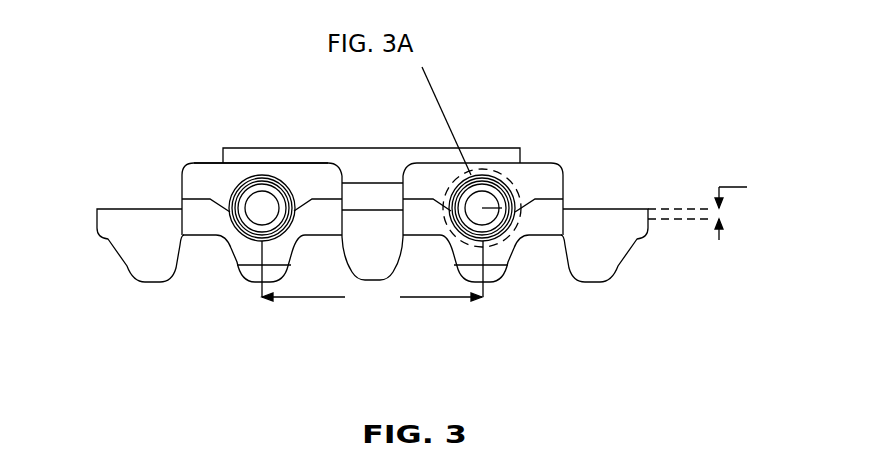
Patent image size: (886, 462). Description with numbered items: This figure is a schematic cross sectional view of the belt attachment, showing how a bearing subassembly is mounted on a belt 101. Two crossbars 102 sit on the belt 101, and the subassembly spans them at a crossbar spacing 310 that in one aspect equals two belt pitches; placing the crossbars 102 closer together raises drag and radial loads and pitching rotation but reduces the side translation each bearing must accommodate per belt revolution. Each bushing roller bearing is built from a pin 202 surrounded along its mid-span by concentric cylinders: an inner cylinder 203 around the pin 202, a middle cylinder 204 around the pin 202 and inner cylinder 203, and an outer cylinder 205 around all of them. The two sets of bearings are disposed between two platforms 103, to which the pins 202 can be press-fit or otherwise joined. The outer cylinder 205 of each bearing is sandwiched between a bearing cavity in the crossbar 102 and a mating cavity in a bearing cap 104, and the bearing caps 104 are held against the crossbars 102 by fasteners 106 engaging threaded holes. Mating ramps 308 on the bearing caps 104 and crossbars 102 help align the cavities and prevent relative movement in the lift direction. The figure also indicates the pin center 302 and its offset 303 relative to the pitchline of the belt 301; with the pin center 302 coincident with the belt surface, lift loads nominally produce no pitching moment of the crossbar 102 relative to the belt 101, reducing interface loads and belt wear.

The belt 101 is at (142, 243).
The crossbar 102 is at (203, 220).
The platform 103 is at (363, 165).
The bearing cap 104 is at (198, 180).
The fastener 106 is at (220, 165).
The pin 202 is at (240, 184).
The inner cylinder 203 is at (262, 208).
The middle cylinder 204 is at (240, 240).
The outer cylinder 205 is at (243, 242).
The pitchline of the belt 301 is at (677, 220).
The pin center 302 is at (680, 203).
The offset 303 is at (759, 208).
The ramp 308 is at (312, 205).
The crossbar spacing 310 is at (372, 300).